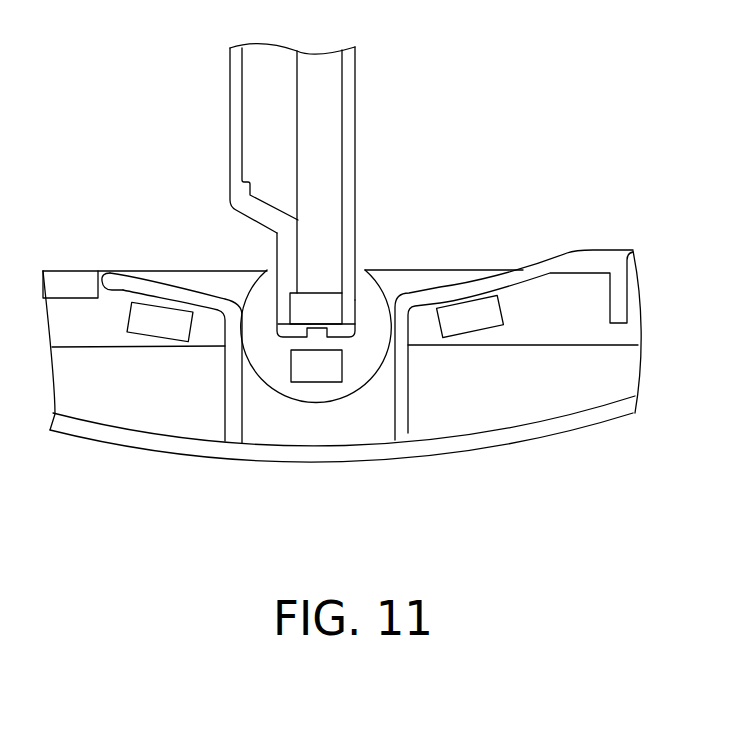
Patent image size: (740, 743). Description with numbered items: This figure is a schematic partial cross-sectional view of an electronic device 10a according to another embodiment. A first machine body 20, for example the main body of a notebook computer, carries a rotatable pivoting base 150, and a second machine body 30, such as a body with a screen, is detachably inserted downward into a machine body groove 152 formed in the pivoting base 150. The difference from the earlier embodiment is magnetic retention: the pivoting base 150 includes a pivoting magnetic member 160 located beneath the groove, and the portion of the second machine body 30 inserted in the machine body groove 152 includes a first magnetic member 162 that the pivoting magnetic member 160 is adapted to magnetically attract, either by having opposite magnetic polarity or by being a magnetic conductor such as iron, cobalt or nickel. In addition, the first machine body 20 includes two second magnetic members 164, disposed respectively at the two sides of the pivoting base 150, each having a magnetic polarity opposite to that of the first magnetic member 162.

The electronic device 10a is at (356, 273).
The first machine body 20 is at (518, 435).
The second machine body 30 is at (361, 92).
The pivoting base 150 is at (283, 362).
The machine body groove 152 is at (278, 288).
The pivoting magnetic member 160 is at (333, 373).
The first magnetic member 162 is at (328, 302).
The second magnetic member 164 is at (147, 315).